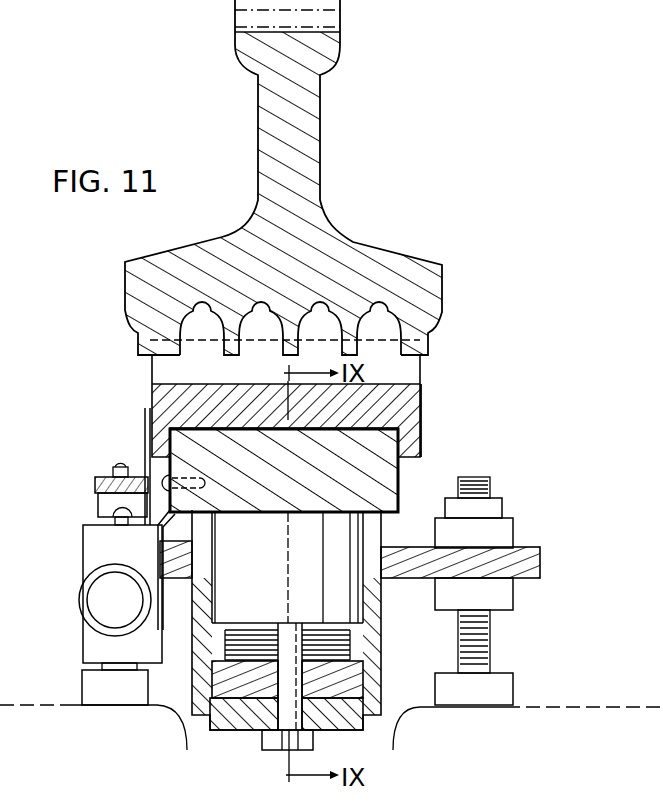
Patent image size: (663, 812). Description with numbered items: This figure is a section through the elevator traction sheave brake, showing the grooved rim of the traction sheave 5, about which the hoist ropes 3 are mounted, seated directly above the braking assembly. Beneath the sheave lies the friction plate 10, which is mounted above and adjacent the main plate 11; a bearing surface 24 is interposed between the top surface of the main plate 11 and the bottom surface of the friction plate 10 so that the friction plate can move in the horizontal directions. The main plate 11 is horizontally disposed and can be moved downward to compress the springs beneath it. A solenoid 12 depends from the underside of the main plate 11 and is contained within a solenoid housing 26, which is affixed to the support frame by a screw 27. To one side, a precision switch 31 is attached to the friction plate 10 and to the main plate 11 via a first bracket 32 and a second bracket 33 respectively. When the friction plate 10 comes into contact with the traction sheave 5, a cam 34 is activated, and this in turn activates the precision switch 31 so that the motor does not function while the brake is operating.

The traction sheave 5 is at (126, 282).
The hoist ropes 3 is at (203, 332).
The bearing surface 24 is at (357, 414).
The friction plate 10 is at (422, 425).
The main plate 11 is at (397, 492).
The bracket 32 is at (143, 468).
The cam 34 is at (98, 510).
The bracket 33 is at (185, 548).
The precision switch 31 is at (80, 608).
The solenoid 12 is at (227, 607).
The solenoid housing 26 is at (387, 700).
The screw 27 is at (268, 752).